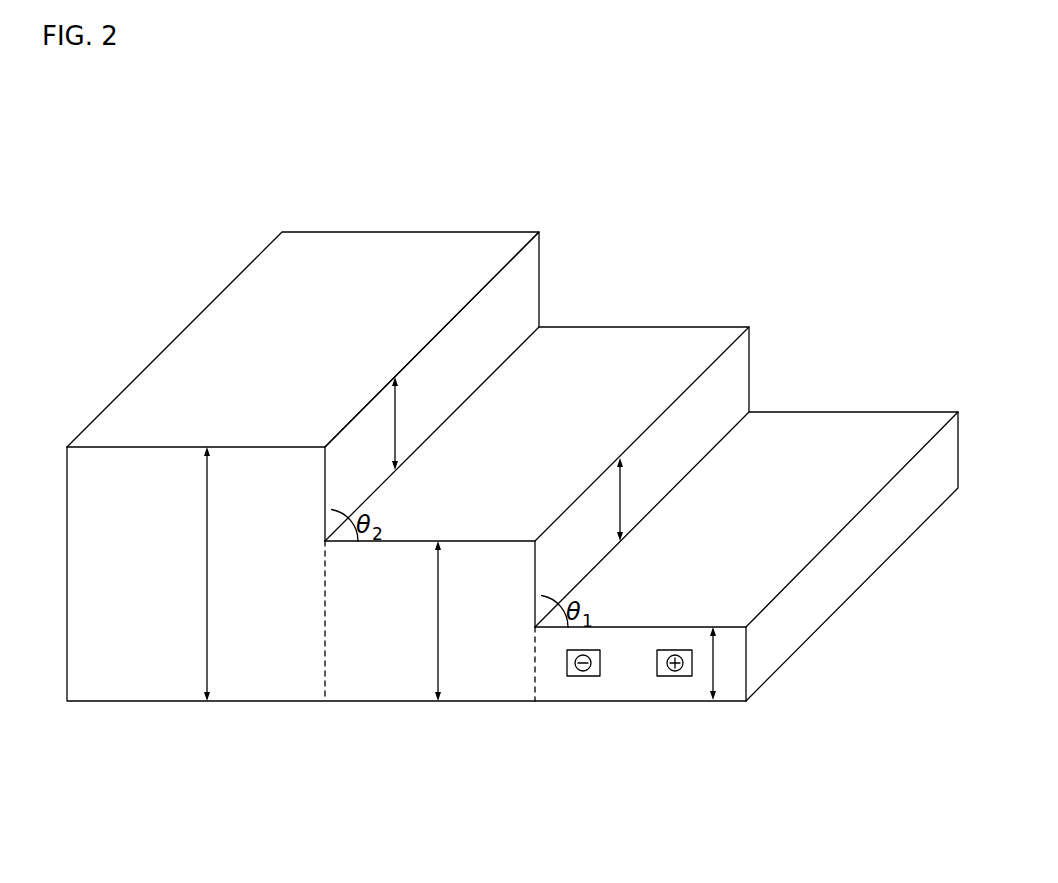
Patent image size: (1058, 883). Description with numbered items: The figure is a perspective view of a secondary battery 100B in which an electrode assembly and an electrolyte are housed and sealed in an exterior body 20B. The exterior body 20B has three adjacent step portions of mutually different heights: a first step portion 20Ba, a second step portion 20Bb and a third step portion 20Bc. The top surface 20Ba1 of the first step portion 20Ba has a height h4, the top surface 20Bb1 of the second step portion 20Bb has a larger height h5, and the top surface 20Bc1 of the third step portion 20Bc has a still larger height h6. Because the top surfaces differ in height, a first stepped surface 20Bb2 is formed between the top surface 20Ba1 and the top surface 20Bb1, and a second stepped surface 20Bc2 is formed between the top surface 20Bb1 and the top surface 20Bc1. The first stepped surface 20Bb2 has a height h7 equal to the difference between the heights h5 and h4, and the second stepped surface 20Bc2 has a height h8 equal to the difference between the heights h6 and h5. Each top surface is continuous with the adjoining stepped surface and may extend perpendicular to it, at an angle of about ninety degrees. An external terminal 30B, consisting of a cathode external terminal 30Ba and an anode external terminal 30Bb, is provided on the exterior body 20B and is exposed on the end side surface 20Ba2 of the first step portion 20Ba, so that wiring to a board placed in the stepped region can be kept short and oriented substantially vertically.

The secondary battery 100B is at (827, 270).
The exterior body 20B is at (772, 544).
The first step portion 20Ba is at (750, 575).
The top surface of the first step portion 20Ba1 is at (713, 594).
The end side surface of the first step portion 20Ba2 is at (565, 680).
The second step portion 20Bb is at (407, 638).
The top surface of the second step portion 20Bb1 is at (465, 493).
The first stepped surface 20Bb2 is at (560, 562).
The third step portion 20Bc is at (191, 612).
The top surface of the third step portion 20Bc1 is at (250, 397).
The second stepped surface 20Bc2 is at (352, 477).
The external terminal 30B is at (773, 826).
The cathode external terminal 30Ba is at (675, 677).
The anode external terminal 30Bb is at (583, 677).
The height of the top surface of the first step portion h4 is at (727, 663).
The height of the top surface of the second step portion h5 is at (452, 621).
The height of the top surface of the third step portion h6 is at (221, 574).
The height of the first stepped surface h7 is at (634, 499).
The height of the second stepped surface h8 is at (409, 423).